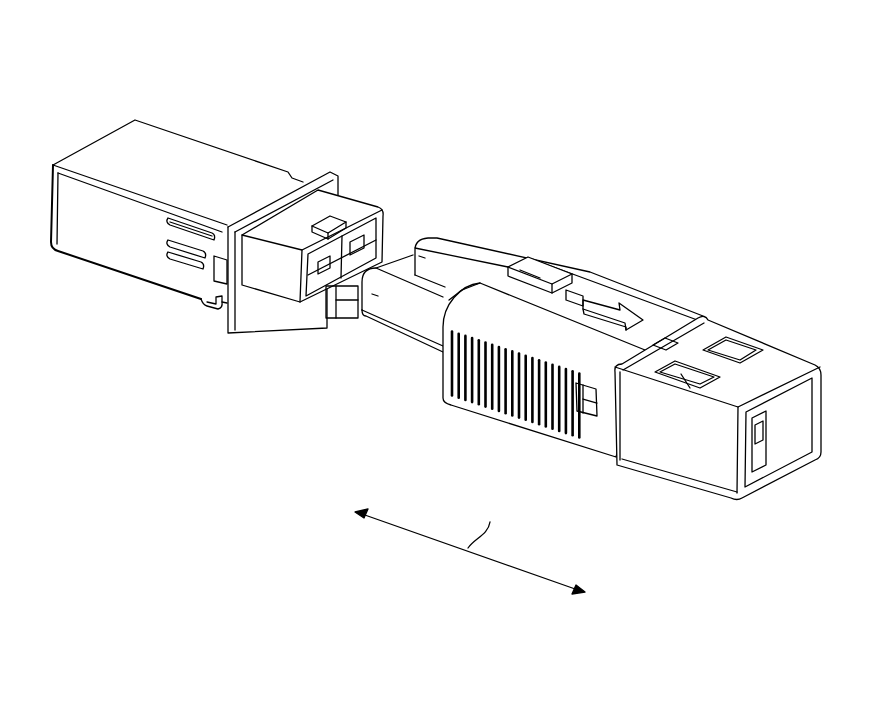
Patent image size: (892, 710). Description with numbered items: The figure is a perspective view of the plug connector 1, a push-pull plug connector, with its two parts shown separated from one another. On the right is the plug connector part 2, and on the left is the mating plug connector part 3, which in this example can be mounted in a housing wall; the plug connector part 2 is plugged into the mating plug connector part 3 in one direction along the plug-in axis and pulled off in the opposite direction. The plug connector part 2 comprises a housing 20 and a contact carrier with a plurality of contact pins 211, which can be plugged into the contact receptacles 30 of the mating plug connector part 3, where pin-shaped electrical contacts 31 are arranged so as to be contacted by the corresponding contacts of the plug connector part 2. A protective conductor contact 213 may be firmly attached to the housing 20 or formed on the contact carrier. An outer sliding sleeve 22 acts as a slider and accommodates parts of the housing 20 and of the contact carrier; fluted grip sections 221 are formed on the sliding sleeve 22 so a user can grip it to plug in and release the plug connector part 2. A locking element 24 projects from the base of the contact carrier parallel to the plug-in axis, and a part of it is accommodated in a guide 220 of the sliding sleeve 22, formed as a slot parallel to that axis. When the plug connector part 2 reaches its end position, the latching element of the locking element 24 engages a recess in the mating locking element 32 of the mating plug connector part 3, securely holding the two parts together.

The plug connector 1 is at (597, 105).
The plug connector part 2 is at (672, 283).
The mating plug connector part 3 is at (198, 134).
The housing 20 is at (677, 437).
The sliding sleeve 22 is at (618, 290).
The locking element 24 is at (542, 287).
The contact receptacles 30 is at (335, 319).
The electrical contacts 31 is at (383, 220).
The mating locking element 32 is at (340, 218).
The contact pins 211 is at (458, 258).
The protective conductor contact 213 is at (425, 345).
The guide 220 is at (525, 277).
The grip sections 221 is at (503, 378).